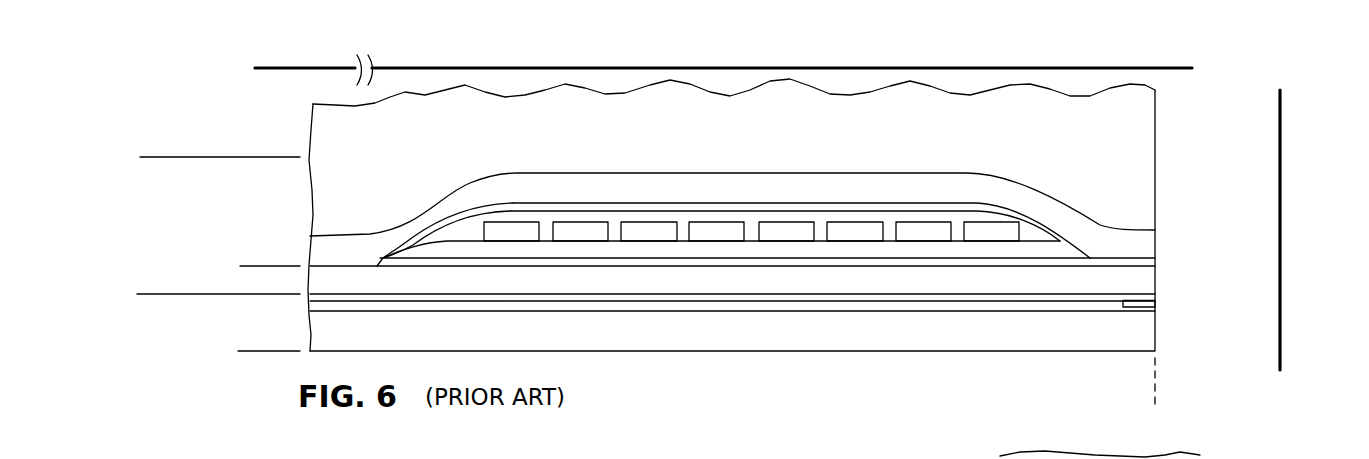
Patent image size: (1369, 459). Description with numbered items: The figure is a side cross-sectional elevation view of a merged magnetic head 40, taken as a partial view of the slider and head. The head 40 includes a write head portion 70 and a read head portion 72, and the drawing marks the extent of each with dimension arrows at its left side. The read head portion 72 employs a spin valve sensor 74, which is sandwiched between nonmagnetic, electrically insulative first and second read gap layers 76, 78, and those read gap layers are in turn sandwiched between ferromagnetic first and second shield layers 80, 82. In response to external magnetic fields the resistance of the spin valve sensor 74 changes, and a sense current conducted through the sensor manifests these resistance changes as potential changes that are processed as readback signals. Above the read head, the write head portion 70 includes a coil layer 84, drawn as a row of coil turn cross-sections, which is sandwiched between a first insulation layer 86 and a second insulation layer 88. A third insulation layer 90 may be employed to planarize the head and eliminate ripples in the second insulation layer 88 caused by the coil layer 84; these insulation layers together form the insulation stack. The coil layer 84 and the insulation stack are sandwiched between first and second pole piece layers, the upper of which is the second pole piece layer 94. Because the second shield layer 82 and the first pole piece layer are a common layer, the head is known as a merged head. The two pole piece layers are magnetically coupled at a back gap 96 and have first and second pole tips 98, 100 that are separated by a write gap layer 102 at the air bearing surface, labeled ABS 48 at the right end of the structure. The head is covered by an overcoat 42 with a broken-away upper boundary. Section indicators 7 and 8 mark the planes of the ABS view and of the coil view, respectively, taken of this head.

The section line 7- 7 is at (1295, 98).
The section line 8- 8 is at (263, 20).
The merged magnetic head 40 is at (283, 112).
The overcoat layer 42 is at (1140, 124).
The air bearing surface (ABS) 48 is at (1157, 402).
The write head portion 70 is at (253, 254).
The read head portion 72 is at (253, 362).
The spin valve sensor 74 is at (1157, 304).
The first read gap layer 76 is at (802, 312).
The second read gap layer 78 is at (768, 291).
The first shield layer 80 is at (883, 337).
The second shield layer 82 is at (732, 335).
The coil layer 84 is at (783, 228).
The first insulation layer 86 is at (655, 250).
The second insulation layer 88 is at (1037, 230).
The third insulation layer 90 is at (553, 207).
The second pole piece layer 94 is at (900, 187).
The back gap 96 is at (348, 265).
The first pole tip 98 is at (1157, 282).
The second pole tip 100 is at (1148, 239).
The write gap layer 102 is at (1157, 260).